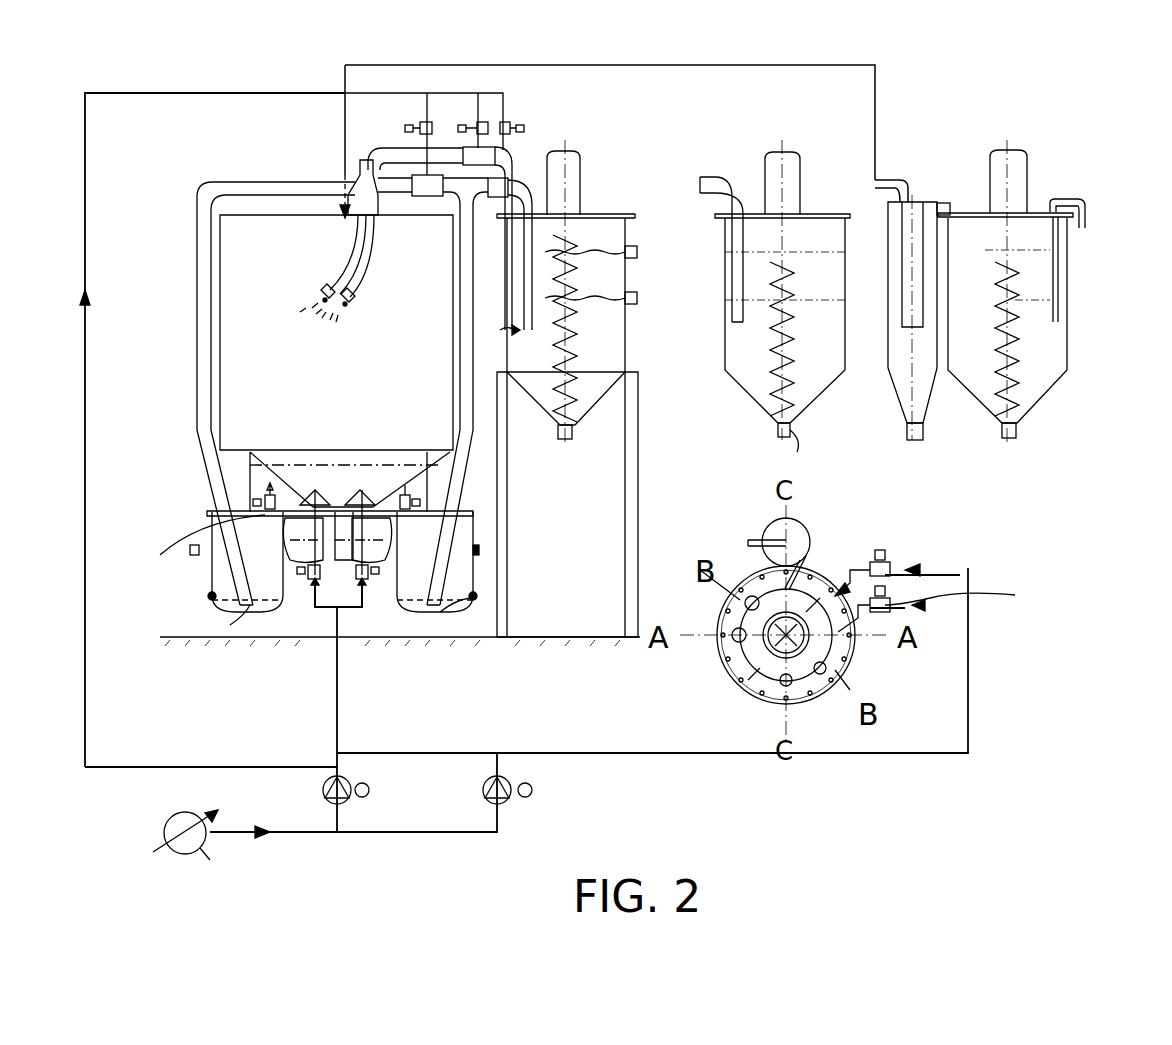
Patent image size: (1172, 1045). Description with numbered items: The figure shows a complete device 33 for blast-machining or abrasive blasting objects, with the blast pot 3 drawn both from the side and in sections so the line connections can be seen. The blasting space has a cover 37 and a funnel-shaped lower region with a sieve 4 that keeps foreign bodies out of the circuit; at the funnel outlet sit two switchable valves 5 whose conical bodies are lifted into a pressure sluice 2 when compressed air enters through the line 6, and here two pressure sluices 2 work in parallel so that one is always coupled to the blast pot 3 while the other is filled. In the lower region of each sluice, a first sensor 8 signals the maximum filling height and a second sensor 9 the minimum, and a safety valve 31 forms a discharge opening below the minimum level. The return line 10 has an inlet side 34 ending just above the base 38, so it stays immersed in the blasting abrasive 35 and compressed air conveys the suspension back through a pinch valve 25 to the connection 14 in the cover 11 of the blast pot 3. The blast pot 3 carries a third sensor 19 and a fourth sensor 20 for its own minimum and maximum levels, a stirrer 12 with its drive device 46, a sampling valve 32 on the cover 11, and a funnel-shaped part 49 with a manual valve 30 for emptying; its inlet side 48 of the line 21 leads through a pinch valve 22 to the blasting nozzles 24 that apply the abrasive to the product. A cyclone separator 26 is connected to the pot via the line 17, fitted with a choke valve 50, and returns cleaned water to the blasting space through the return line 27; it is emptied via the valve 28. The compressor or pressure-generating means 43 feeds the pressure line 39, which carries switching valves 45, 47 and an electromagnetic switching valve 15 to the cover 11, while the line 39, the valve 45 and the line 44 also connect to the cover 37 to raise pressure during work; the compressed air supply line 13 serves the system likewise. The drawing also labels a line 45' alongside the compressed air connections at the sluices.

The pressure sluice 2 is at (388, 535).
The blast pot 3 is at (628, 338).
The sieve 4 is at (315, 450).
The switchable valve 5 is at (334, 481).
The compressed air line 6 is at (165, 552).
The first sensor 8 is at (207, 555).
The second sensor 9 is at (210, 600).
The return line 10 is at (195, 283).
The cover 11 is at (800, 205).
The stirrer 12 is at (580, 362).
The compressed air supply line 13 is at (733, 642).
The connection 14 is at (540, 232).
The switching valve 15 is at (890, 560).
The line 17 is at (945, 203).
The third sensor 19 is at (640, 298).
The fourth sensor 20 is at (640, 252).
The line 21 is at (382, 148).
The pinch valve 22 is at (485, 152).
The blasting nozzle 24 is at (340, 302).
The pinch valve 25 is at (495, 185).
The cyclone separator 26 is at (888, 372).
The return line 27 is at (300, 105).
The valve 28 is at (925, 433).
The manual valve 30 is at (814, 455).
The safety valve 31 is at (830, 670).
The valve 32 is at (790, 690).
The device for blast-machining 33 is at (970, 128).
The inlet side of the return line 34 is at (245, 640).
The blasting abrasive 35 is at (312, 330).
The cover 37 is at (282, 230).
The base 38 is at (226, 617).
The pressure line 39 is at (962, 570).
The pressure-generating means 43 is at (195, 852).
The line 44 is at (95, 705).
The valve 45 is at (373, 791).
The line 45' is at (357, 566).
The drive device 46 is at (578, 180).
The valve 47 is at (532, 797).
The inlet side of the pressure line 48 is at (520, 400).
The funnel-shaped part 49 is at (416, 480).
The choke valve 50 is at (942, 185).